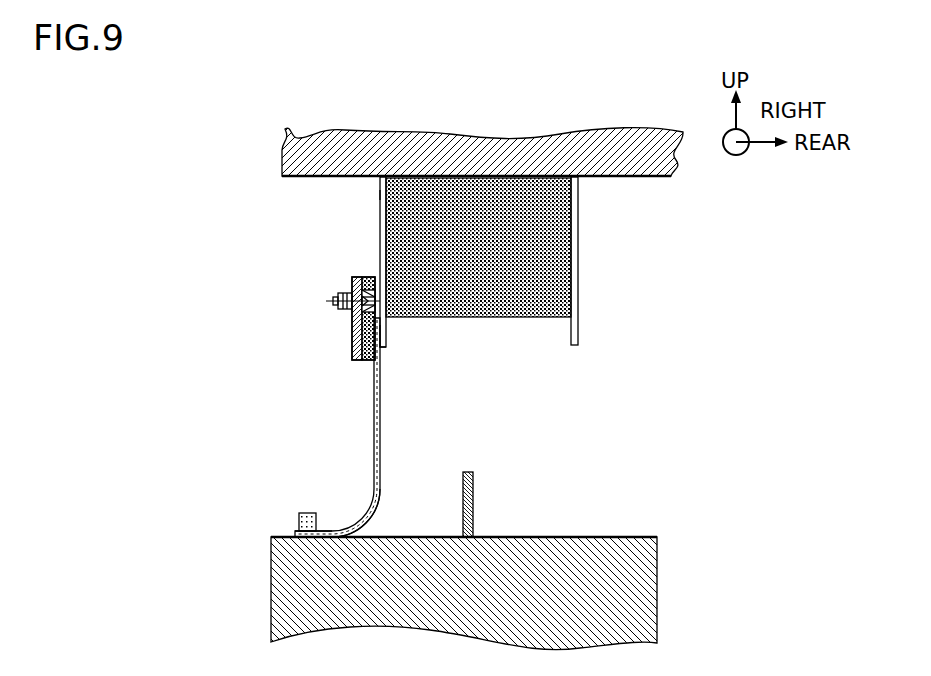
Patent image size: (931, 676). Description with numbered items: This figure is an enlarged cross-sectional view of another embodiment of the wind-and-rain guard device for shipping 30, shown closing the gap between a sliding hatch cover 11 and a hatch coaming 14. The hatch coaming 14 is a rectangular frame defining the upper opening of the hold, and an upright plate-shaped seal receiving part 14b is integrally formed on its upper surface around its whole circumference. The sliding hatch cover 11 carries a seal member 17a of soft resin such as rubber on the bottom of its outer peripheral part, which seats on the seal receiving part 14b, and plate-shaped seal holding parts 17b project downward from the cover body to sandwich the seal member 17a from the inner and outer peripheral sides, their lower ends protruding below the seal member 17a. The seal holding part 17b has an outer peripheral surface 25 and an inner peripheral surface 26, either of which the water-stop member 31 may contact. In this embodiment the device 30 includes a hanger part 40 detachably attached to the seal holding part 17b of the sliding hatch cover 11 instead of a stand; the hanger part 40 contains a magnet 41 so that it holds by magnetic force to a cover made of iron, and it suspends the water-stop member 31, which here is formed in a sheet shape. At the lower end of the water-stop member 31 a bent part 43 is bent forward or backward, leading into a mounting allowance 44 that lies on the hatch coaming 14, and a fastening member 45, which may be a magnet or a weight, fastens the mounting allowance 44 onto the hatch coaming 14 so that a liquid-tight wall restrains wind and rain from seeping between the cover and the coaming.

The sliding hatch cover 11 is at (663, 182).
The hatch coaming 14 is at (655, 526).
The seal receiving part 14b is at (467, 472).
The seal member 17a is at (512, 318).
The seal holding part 17b is at (379, 245).
The outer peripheral surface 25 is at (379, 194).
The inner peripheral surface 26 is at (387, 333).
The wind-and-rain guard device for shipping 30 is at (317, 316).
The water-stop member 31 is at (372, 435).
The hanger part 40 is at (311, 315).
The magnet 41 is at (362, 277).
The bent part 43 is at (373, 510).
The mounting allowance 44 is at (322, 531).
The fastening member 45 is at (305, 513).